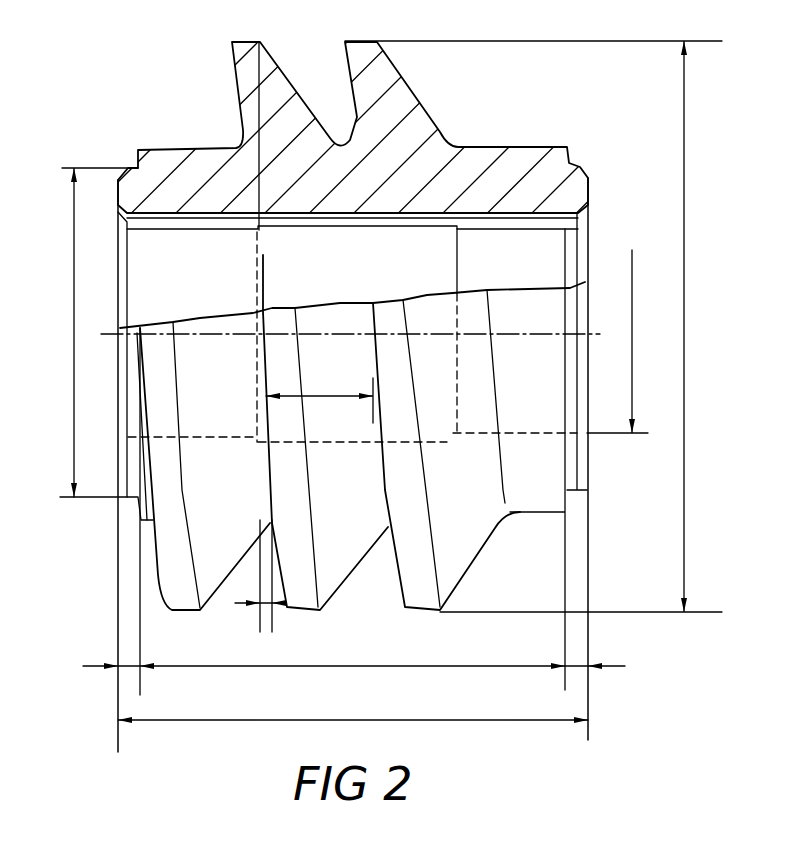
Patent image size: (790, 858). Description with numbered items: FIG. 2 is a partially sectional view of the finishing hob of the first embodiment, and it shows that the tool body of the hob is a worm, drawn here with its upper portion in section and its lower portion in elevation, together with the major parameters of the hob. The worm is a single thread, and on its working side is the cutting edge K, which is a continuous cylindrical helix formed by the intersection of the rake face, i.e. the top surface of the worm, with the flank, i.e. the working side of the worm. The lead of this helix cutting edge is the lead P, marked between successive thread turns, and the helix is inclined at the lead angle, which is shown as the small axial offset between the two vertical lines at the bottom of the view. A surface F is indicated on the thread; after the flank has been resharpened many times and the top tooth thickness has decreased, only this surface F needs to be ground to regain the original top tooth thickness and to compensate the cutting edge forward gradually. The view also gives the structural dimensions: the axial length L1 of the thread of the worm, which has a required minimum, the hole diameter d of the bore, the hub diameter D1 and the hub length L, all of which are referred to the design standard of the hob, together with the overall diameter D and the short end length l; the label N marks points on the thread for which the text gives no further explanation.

The surface F is at (173, 328).
The thread groove notch N is at (293, 330).
The lead of the helix cutting edge P is at (319, 396).
The cutting edge K is at (153, 554).
The hub diameter D1 is at (92, 332).
The outer diameter D is at (533, 326).
The hole diameter d is at (617, 341).
The axial length of the thread of the worm L1 is at (354, 511).
The hub length L is at (353, 710).
The end length l is at (353, 655).